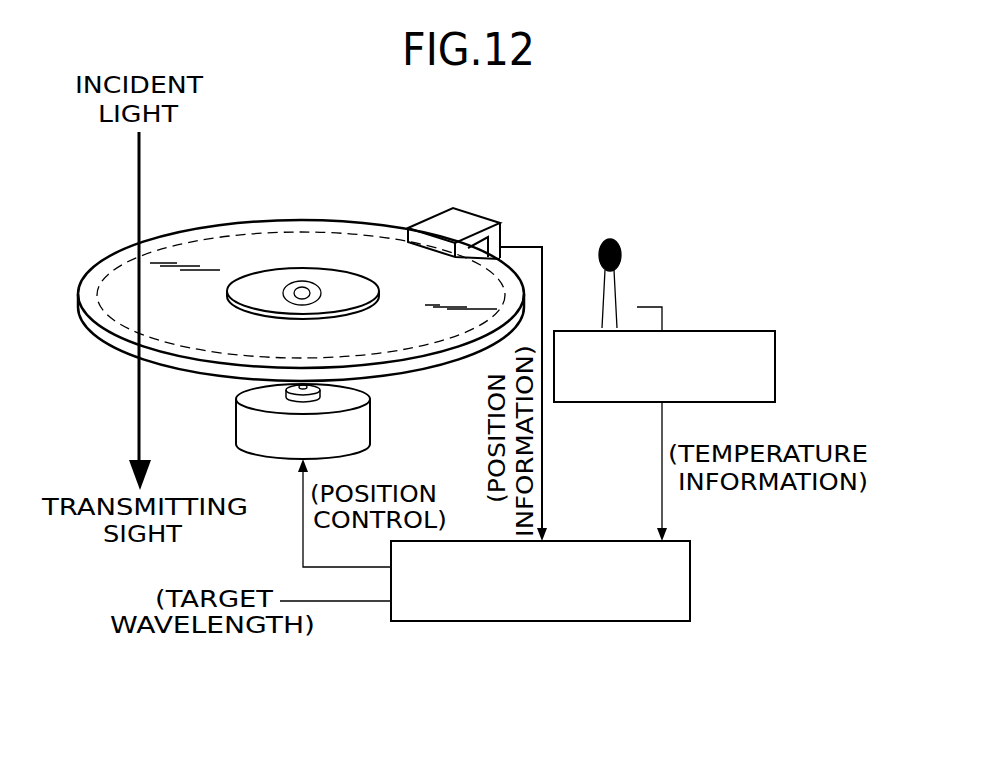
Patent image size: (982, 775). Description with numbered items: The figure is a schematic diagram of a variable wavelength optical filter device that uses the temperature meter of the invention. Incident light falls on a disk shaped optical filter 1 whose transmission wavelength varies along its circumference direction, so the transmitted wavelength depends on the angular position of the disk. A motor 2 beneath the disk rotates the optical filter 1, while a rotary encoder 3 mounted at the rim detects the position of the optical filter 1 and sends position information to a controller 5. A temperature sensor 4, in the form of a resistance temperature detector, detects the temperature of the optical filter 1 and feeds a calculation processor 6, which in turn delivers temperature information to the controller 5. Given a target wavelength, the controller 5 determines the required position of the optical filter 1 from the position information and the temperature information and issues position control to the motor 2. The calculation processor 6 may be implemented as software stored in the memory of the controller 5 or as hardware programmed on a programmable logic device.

The disk shaped optical filter 1 is at (257, 245).
The motor 2 is at (370, 420).
The rotary encoder 3 is at (462, 227).
The temperature sensor 4 is at (621, 255).
The controller 5 is at (690, 567).
The calculation processor 6 is at (775, 368).